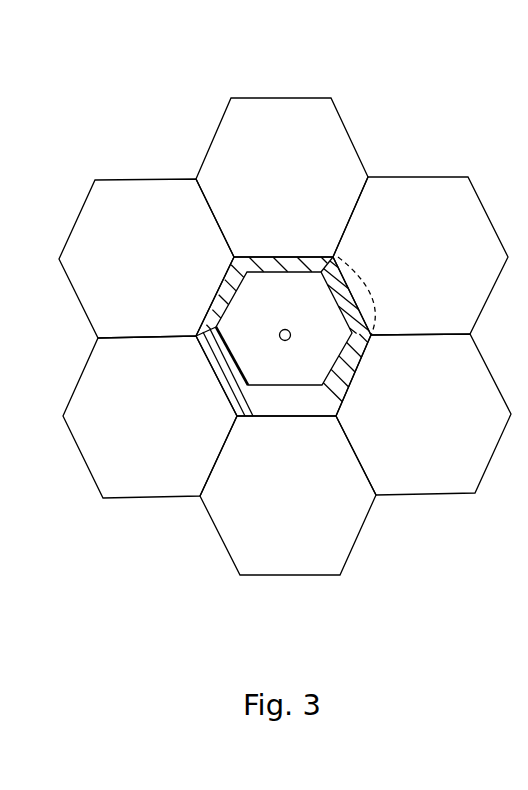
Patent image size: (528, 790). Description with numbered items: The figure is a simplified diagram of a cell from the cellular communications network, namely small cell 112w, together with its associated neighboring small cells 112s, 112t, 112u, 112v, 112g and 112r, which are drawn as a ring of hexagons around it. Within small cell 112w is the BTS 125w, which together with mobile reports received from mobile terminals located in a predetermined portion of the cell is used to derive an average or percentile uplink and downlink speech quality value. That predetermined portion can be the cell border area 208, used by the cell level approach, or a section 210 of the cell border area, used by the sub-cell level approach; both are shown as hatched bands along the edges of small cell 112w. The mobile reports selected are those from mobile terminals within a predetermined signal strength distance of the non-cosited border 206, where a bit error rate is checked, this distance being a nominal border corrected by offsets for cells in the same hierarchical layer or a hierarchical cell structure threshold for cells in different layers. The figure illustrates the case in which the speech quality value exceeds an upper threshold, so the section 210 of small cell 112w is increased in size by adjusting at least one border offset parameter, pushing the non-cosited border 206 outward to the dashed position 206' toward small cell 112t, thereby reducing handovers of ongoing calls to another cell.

The small cell 112s is at (282, 177).
The small cell 112t is at (420, 256).
The small cell 112u is at (423, 414).
The small cell 112v is at (288, 495).
The small cell 112g is at (150, 417).
The small cell 112r is at (146, 258).
The small cell 112w is at (283, 336).
The BTS 125w is at (281, 333).
The cell border area 208 is at (236, 262).
The section of the cell border area 210 is at (336, 283).
The non-cosited border 206 is at (371, 332).
The increased non-cosited border 206' is at (432, 210).